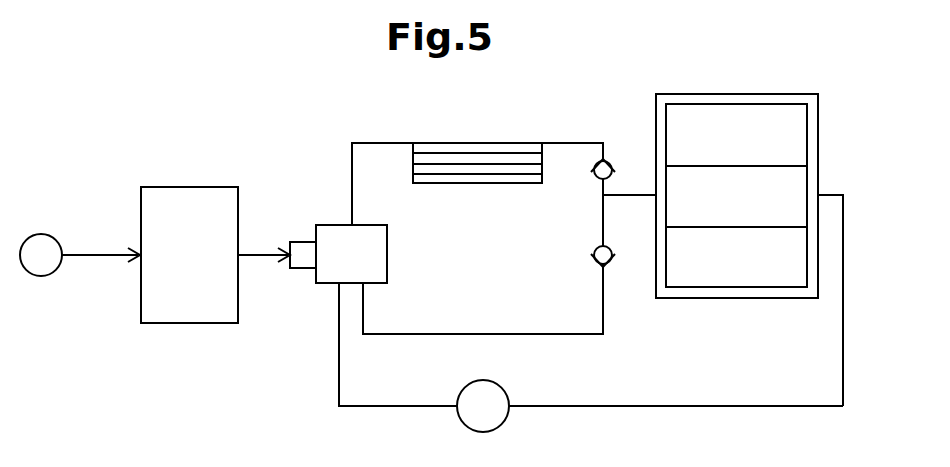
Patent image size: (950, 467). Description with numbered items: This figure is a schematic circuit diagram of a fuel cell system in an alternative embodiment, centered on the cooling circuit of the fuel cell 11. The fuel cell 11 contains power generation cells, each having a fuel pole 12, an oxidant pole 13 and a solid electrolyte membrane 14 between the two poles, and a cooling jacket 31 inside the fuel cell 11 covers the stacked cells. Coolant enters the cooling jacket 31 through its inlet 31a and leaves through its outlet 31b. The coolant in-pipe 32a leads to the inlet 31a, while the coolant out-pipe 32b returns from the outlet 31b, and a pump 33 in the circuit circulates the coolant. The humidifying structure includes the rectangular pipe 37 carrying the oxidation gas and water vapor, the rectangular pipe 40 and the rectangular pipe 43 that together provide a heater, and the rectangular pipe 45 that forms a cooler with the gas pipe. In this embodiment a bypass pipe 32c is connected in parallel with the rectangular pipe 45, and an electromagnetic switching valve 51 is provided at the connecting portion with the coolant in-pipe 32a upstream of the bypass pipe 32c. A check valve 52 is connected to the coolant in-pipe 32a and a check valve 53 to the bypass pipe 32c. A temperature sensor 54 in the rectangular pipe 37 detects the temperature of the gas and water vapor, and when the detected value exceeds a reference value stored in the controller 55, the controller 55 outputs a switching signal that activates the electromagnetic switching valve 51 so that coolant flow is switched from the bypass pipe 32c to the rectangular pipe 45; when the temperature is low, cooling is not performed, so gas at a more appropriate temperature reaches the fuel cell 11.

The fuel cell 11 is at (791, 90).
The fuel pole 12 is at (736, 144).
The oxidant pole 13 is at (736, 266).
The solid electrolyte membrane 14 is at (736, 206).
The cooling jacket 31 is at (691, 98).
The inlet 31a is at (656, 193).
The outlet 31b is at (822, 196).
The coolant in-pipe 32a is at (383, 143).
The coolant out-pipe 32b is at (682, 405).
The bypass pipe 32c is at (605, 318).
The pump 33 is at (482, 385).
The rectangular pipe 37 is at (434, 157).
The rectangular pipe 40 is at (434, 170).
The rectangular pipe 43 is at (512, 180).
The rectangular pipe 45 is at (512, 147).
The electromagnetic switching valve 51 is at (380, 275).
The check valve 52 is at (598, 166).
The check valve 53 is at (593, 255).
The temperature sensor 54 is at (42, 238).
The controller 55 is at (190, 190).